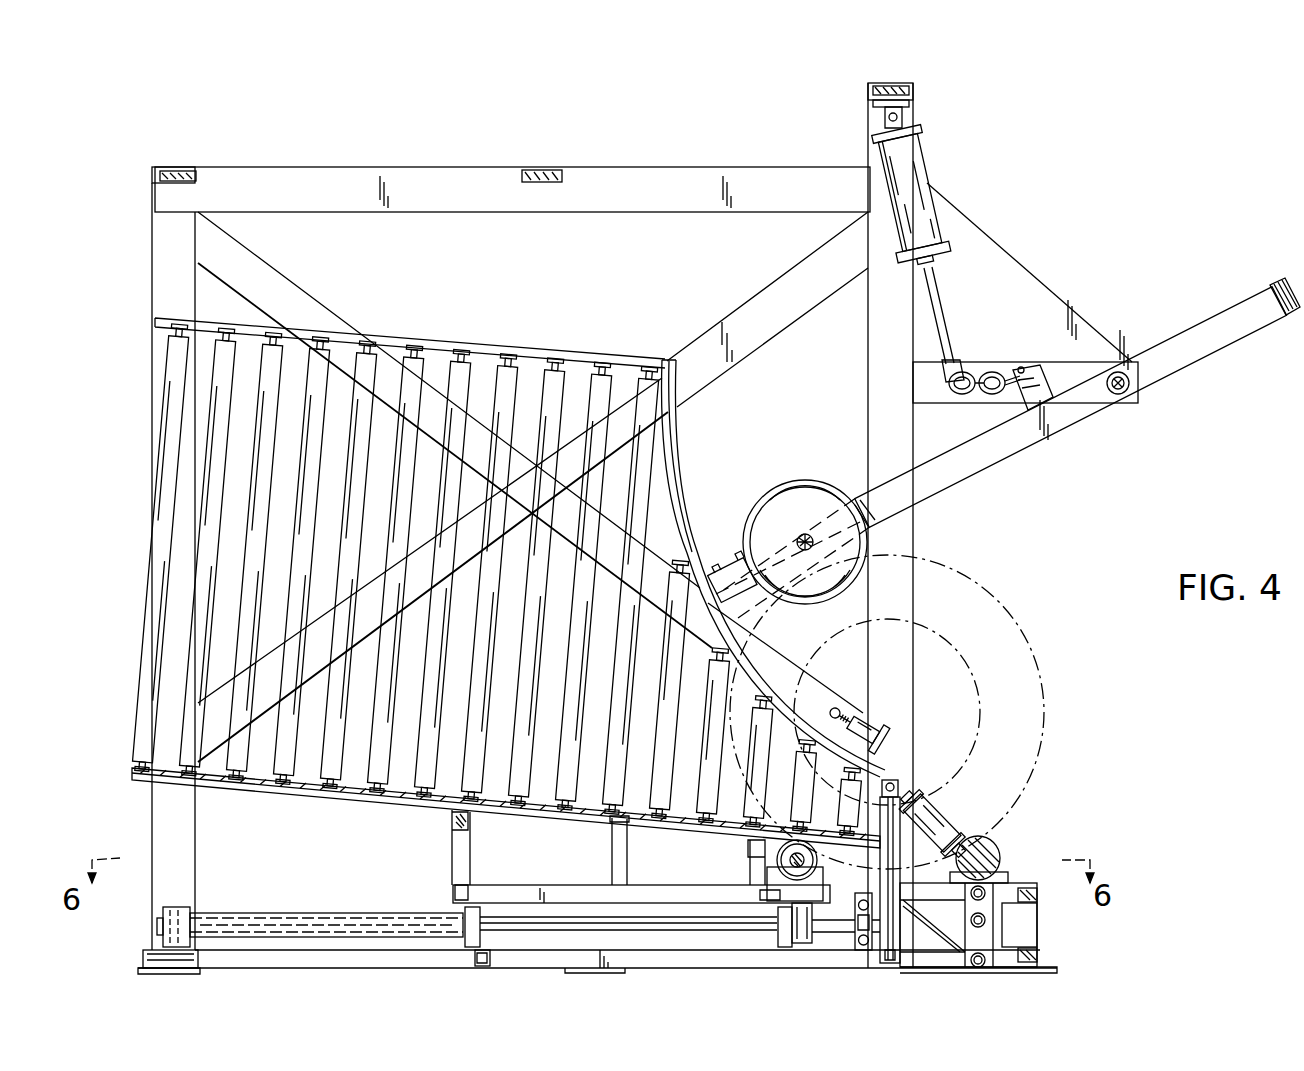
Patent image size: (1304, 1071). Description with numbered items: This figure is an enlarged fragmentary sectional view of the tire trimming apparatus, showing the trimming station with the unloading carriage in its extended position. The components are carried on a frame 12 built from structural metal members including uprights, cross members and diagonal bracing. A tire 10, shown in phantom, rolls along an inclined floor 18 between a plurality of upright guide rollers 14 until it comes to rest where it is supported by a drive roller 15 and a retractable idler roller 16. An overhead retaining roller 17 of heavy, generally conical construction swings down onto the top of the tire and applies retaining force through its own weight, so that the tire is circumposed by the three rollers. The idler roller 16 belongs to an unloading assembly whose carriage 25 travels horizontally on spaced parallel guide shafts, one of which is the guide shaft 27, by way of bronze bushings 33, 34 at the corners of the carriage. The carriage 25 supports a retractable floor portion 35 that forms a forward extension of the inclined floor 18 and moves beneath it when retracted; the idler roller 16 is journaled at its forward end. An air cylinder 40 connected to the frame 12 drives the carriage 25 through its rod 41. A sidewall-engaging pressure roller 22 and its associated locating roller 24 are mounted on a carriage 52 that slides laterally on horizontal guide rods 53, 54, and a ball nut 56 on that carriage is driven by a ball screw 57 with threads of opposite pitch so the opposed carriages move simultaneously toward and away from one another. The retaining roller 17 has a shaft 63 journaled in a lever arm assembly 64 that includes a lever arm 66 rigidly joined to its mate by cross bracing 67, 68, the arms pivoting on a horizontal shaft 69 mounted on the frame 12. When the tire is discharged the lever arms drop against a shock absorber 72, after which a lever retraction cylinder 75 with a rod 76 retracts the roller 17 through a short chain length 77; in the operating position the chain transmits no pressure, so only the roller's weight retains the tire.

The tire 10 is at (1025, 620).
The frame 12 is at (470, 176).
The upright guide rollers 14 is at (262, 362).
The drive roller 15 is at (993, 843).
The retractable idler roller 16 is at (770, 862).
The overhead retaining roller 17 is at (790, 490).
The inclined floor 18 is at (296, 790).
The pressure roller 22 is at (890, 815).
The locating roller 24 is at (937, 823).
The carriage 25 is at (436, 880).
The guide shaft 27 is at (838, 928).
The bronze bushing 33 is at (458, 938).
The bronze bushing 34 is at (808, 943).
The retractable floor portion 35 is at (535, 815).
The air cylinder 40 is at (298, 913).
The rod 41 is at (520, 925).
The carriage 52 is at (1000, 937).
The horizontal guide rod 53 is at (990, 890).
The horizontal guide rod 54 is at (980, 968).
The ball nut 56 is at (960, 926).
The ball screw 57 is at (988, 918).
The shaft 63 is at (812, 535).
The lever arm assembly 64 is at (976, 478).
The lever arm 66 is at (1040, 428).
The cross bracing 67 is at (1262, 293).
The cross bracing 68 is at (724, 553).
The horizontal shaft 69 is at (1120, 395).
The shock absorber 72 is at (866, 740).
The lever retraction cylinder 75 is at (920, 162).
The rod 76 is at (940, 322).
The short chain length 77 is at (966, 400).